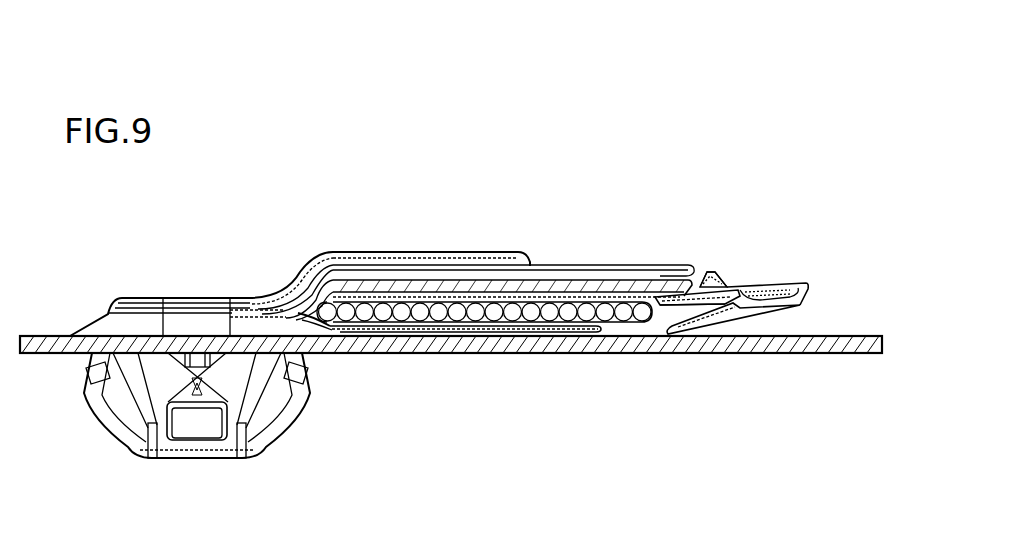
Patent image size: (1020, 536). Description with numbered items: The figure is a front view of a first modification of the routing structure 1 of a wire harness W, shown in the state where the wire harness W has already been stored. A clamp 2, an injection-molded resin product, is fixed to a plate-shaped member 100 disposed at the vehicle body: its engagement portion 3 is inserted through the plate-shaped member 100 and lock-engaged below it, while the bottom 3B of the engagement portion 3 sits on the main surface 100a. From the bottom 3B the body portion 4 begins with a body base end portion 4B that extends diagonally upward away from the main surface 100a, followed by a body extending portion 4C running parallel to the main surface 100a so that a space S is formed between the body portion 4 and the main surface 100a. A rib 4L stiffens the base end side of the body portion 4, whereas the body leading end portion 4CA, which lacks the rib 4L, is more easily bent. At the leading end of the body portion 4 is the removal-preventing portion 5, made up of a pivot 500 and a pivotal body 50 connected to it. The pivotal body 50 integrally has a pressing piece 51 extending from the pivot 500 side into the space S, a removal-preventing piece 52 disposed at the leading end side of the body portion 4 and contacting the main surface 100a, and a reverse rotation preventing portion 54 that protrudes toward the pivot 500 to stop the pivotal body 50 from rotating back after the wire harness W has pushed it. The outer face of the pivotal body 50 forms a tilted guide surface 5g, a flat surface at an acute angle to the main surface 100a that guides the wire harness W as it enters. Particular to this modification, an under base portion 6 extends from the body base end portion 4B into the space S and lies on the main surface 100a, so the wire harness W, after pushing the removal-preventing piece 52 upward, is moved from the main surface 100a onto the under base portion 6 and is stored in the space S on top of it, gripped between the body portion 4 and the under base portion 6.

The routing structure 1 is at (636, 122).
The clamp 2 is at (107, 301).
The engagement portion 3 is at (264, 445).
The bottom 3B is at (193, 308).
The body portion 4 is at (478, 302).
The body base end portion 4B is at (285, 295).
The rib 4L is at (400, 252).
The body extending portion 4C is at (462, 280).
The body leading end portion 4CA is at (563, 270).
The wire harness W is at (585, 300).
The pivot 500 is at (676, 268).
The reverse rotation preventing portion 54 is at (713, 272).
The pivotal body 50 is at (760, 285).
The main surface 100a is at (835, 332).
The plate-shaped member 100 is at (642, 356).
The space S is at (313, 294).
The under base portion 6 is at (440, 330).
The pressing piece 51 is at (500, 292).
The removal-preventing piece 52 is at (720, 318).
The tilted guide surface 5g is at (740, 315).
The removal-preventing portion 5 is at (666, 302).